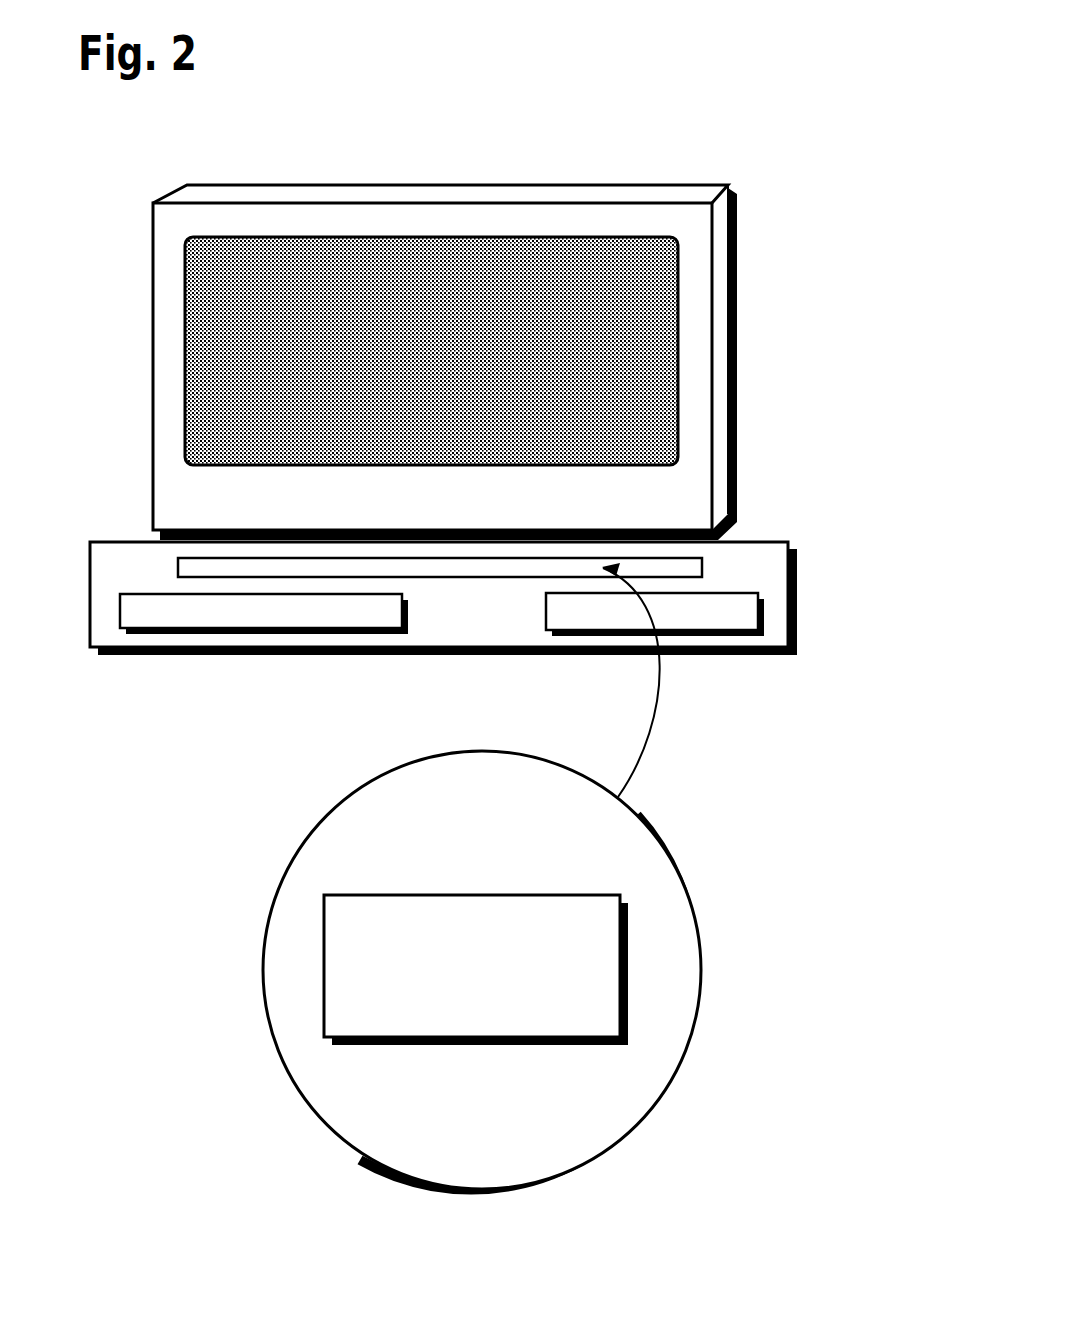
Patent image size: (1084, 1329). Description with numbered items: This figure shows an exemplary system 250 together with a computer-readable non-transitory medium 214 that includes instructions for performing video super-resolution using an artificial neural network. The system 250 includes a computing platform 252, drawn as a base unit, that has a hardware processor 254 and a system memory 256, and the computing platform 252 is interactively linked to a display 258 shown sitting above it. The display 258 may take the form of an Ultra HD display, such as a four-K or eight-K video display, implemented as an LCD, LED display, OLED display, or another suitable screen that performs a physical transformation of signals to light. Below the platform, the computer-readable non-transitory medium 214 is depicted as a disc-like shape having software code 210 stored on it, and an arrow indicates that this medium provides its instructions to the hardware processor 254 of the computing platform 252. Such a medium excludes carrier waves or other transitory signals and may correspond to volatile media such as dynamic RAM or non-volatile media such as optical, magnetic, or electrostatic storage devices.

The system 250 is at (848, 89).
The computing platform 252 is at (790, 598).
The hardware processor 254 is at (409, 612).
The system memory 256 is at (726, 592).
The display 258 is at (530, 185).
The computer-readable non-transitory medium 214 is at (265, 950).
The software code 210 is at (490, 1046).